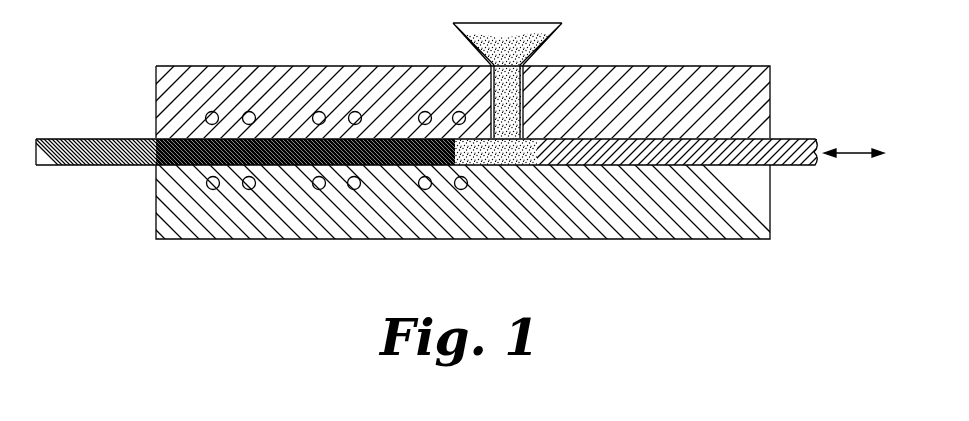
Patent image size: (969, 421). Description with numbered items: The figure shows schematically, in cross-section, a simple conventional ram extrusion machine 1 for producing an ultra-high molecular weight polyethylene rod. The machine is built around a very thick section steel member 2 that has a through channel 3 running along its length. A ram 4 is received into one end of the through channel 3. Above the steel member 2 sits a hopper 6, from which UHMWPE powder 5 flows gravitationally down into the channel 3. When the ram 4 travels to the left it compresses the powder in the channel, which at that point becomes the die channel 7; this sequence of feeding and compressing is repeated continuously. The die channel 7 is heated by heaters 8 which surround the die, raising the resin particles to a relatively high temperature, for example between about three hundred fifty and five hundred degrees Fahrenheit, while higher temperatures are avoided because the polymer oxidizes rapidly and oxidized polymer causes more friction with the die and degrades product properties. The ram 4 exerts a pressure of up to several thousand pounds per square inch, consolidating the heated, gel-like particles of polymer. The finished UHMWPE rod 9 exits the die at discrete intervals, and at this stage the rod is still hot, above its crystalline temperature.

The apparatus 1 is at (270, 66).
The thick section steel member 2 is at (633, 78).
The through channel 3 is at (517, 165).
The ram 4 is at (685, 158).
The UHMWPE powder 5 is at (502, 105).
The hopper 6 is at (520, 25).
The die channel 7 is at (275, 165).
The heaters 8 is at (249, 190).
The UHMWPE rod 9 is at (102, 167).